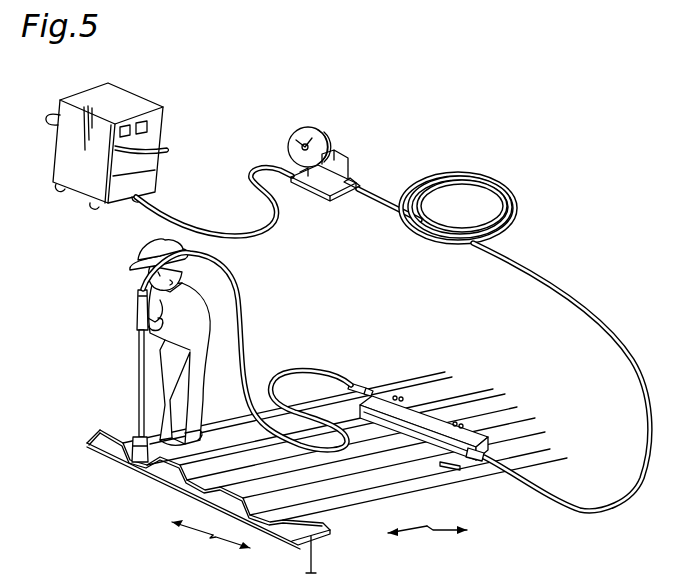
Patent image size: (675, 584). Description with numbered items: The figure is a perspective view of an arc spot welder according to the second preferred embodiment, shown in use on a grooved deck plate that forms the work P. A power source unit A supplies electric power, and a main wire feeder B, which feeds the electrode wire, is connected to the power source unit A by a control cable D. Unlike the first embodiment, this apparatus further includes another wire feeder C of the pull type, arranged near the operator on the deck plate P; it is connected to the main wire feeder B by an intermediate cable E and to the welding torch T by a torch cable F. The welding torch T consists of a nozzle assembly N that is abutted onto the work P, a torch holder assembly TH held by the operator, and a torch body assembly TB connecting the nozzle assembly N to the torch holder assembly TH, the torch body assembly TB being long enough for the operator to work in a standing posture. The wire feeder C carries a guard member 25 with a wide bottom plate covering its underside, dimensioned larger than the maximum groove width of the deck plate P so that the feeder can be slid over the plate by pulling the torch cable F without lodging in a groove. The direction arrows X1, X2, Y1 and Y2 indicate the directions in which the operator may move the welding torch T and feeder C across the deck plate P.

The power source unit A is at (150, 94).
The wire feeder B is at (342, 140).
The wire feeder C is at (390, 389).
The control cable D is at (244, 179).
The intermediate cable E is at (516, 216).
The torch cable F is at (290, 365).
The welding torch T is at (87, 376).
The torch holder assembly TH is at (137, 315).
The torch body assembly TB is at (138, 372).
The nozzle assembly N is at (105, 412).
The deck plate P is at (165, 470).
The guard member 25 is at (440, 467).
The direction X1 is at (400, 546).
The direction X2 is at (463, 539).
The direction Y1 is at (179, 533).
The direction Y2 is at (237, 556).